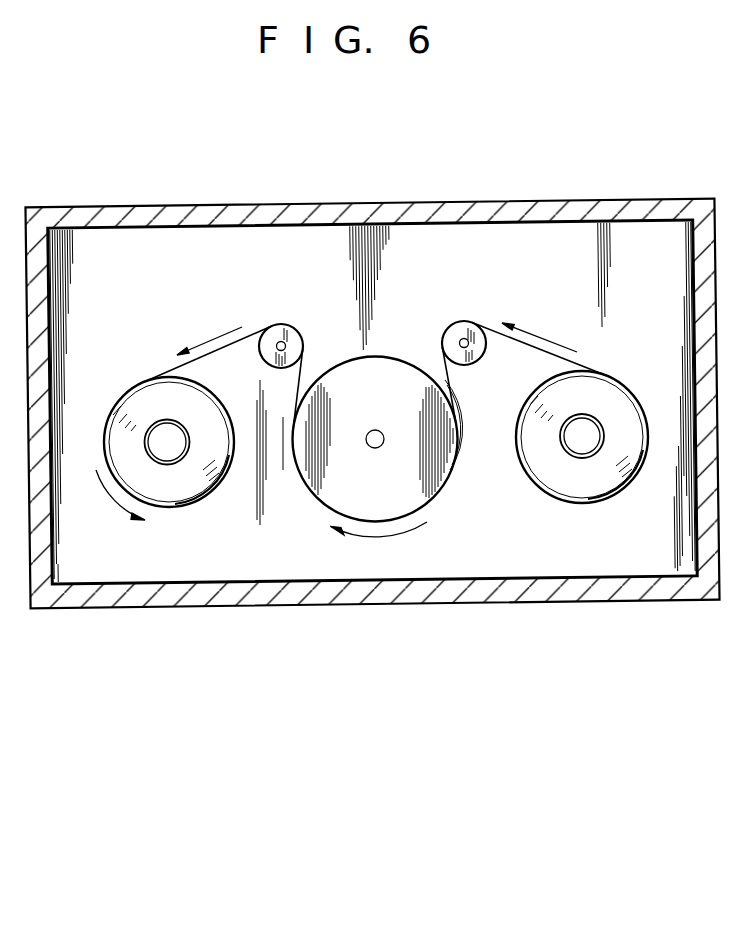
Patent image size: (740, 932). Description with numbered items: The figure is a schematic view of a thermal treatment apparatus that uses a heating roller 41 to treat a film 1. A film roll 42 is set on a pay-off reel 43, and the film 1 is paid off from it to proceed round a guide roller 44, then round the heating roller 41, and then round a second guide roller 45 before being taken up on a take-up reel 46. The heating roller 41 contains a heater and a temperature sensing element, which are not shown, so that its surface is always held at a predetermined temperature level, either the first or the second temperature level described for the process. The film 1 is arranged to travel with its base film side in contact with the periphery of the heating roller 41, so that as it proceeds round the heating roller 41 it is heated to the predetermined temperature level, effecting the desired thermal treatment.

The film 1 is at (259, 334).
The heating roller 41 is at (374, 362).
The film roll 42 is at (618, 390).
The pay-off reel 43 is at (573, 447).
The guide roller 44 is at (461, 331).
The guide roller 45 is at (290, 336).
The take-up reel 46 is at (163, 437).